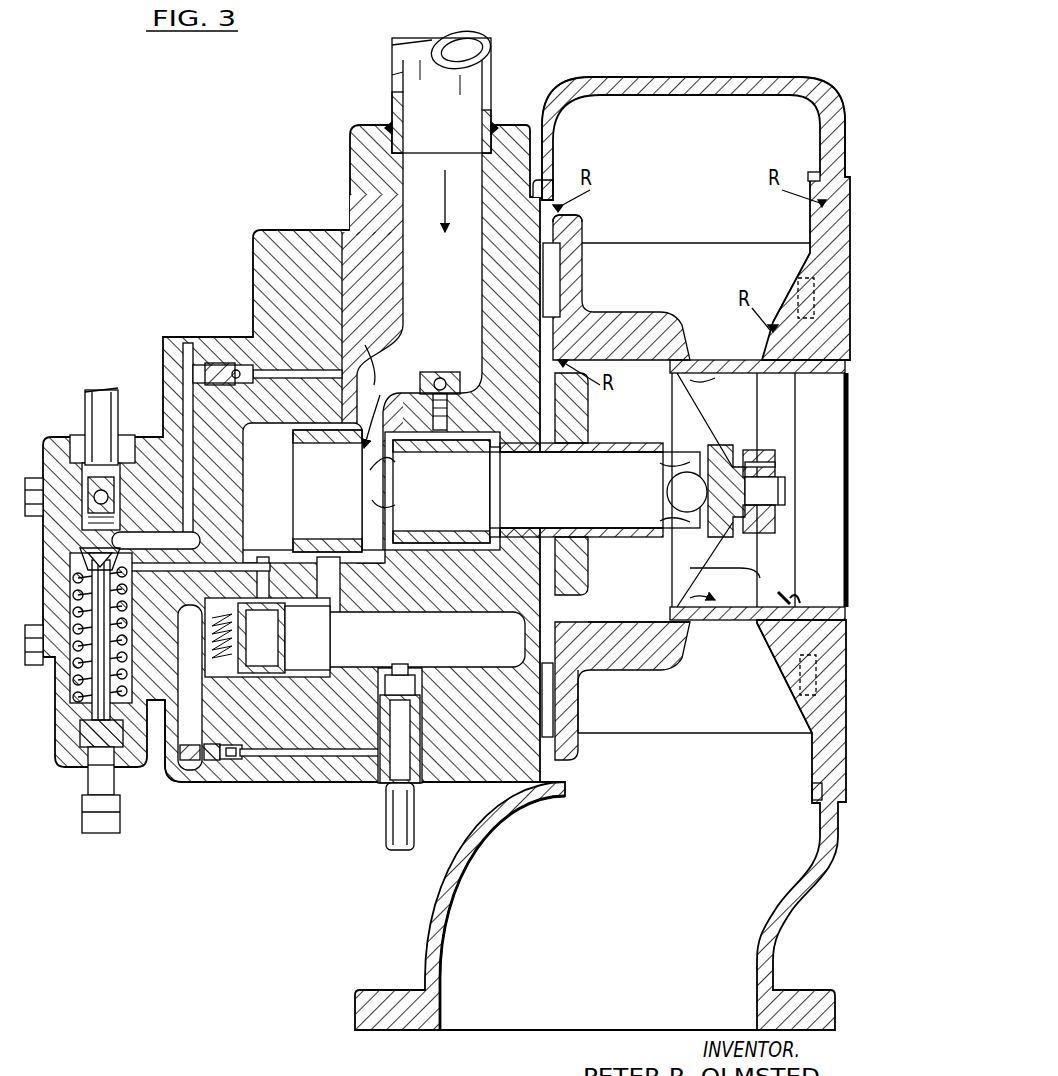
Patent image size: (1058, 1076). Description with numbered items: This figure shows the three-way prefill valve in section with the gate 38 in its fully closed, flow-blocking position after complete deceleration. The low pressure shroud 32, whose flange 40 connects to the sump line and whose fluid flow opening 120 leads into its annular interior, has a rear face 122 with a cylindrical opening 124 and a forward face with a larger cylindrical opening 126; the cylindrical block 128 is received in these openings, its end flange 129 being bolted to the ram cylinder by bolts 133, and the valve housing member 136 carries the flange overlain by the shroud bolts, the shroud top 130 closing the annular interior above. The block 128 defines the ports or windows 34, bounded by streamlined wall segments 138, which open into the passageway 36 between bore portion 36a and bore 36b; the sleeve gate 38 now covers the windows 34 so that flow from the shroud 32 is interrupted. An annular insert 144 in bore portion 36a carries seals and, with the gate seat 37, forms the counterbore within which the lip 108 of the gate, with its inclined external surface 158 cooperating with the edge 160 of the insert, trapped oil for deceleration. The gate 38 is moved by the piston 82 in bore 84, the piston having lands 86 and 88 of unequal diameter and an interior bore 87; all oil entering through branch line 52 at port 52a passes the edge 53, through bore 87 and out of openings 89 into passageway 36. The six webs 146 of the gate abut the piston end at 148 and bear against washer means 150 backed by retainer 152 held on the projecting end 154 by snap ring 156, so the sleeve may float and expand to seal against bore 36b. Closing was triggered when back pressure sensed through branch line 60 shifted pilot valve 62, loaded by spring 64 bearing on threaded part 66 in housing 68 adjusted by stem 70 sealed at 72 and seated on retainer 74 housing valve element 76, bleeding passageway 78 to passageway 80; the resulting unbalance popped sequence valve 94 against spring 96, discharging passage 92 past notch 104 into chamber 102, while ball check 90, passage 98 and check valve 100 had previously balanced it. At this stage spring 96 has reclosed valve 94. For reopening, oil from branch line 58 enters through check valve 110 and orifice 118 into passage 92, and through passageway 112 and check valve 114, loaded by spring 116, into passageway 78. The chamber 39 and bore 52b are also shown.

The low pressure shroud 32 is at (608, 77).
The ports or windows 34 is at (691, 358).
The passageway 36 is at (635, 570).
The bore portion 36a is at (776, 490).
The bore 36b is at (612, 624).
The gate seat 37 is at (840, 418).
The gate 38 is at (713, 358).
The chamber 39 is at (680, 191).
The flange 40 is at (372, 990).
The branch line 52 is at (392, 62).
The port 52a is at (362, 455).
The inlet bore 52b is at (454, 287).
The edge of port 53 is at (360, 532).
The branch line 58 is at (385, 840).
The branch line 60 is at (88, 404).
The pilot valve 62 is at (93, 494).
The spring 64 is at (75, 612).
The externally threaded part 66 is at (72, 703).
The housing 68 is at (162, 775).
The adjusting stem 70 is at (110, 820).
The seal 72 is at (86, 768).
The retainer 74 is at (76, 566).
The valve element 76 is at (118, 565).
The passageway 78 is at (188, 770).
The passageway 80 is at (175, 571).
The piston 82 is at (603, 443).
The bore 84 is at (388, 475).
The land 86 is at (488, 538).
The interior bore 87 is at (545, 453).
The land 88 is at (415, 508).
The openings 89 is at (667, 490).
The ball check 90 is at (441, 372).
The passage 92 is at (418, 638).
The sequence valve 94 is at (268, 672).
The spring 96 is at (228, 662).
The passage 98 is at (298, 370).
The check valve 100 is at (225, 362).
The chamber 102 is at (280, 457).
The notch 104 is at (262, 557).
The lip 108 is at (765, 578).
The check valve 110 is at (398, 710).
The passageway 112 is at (312, 758).
The check valve 114 is at (238, 760).
The spring 116 is at (214, 762).
The orifice 118 is at (405, 664).
The fluid flow opening 120 is at (440, 1030).
The rear face 122 is at (548, 135).
The cylindrical opening 124 is at (584, 240).
The cylindrical opening 126 is at (810, 218).
The cylindrical block 128 is at (588, 312).
The end flange 129 is at (812, 745).
The housing top 130 is at (838, 110).
The bolts 133 is at (800, 292).
The valve housing member 136 is at (484, 768).
The wall segments 138 is at (615, 725).
The annular insert 144 is at (820, 490).
The webs 146 is at (683, 394).
The abutment 148 is at (733, 447).
The washer means 150 is at (758, 450).
The retainer 152 is at (776, 466).
The projecting end 154 is at (786, 490).
The snap ring 156 is at (776, 510).
The inclined external surface 158 is at (790, 600).
The edge of insert 160 is at (800, 600).